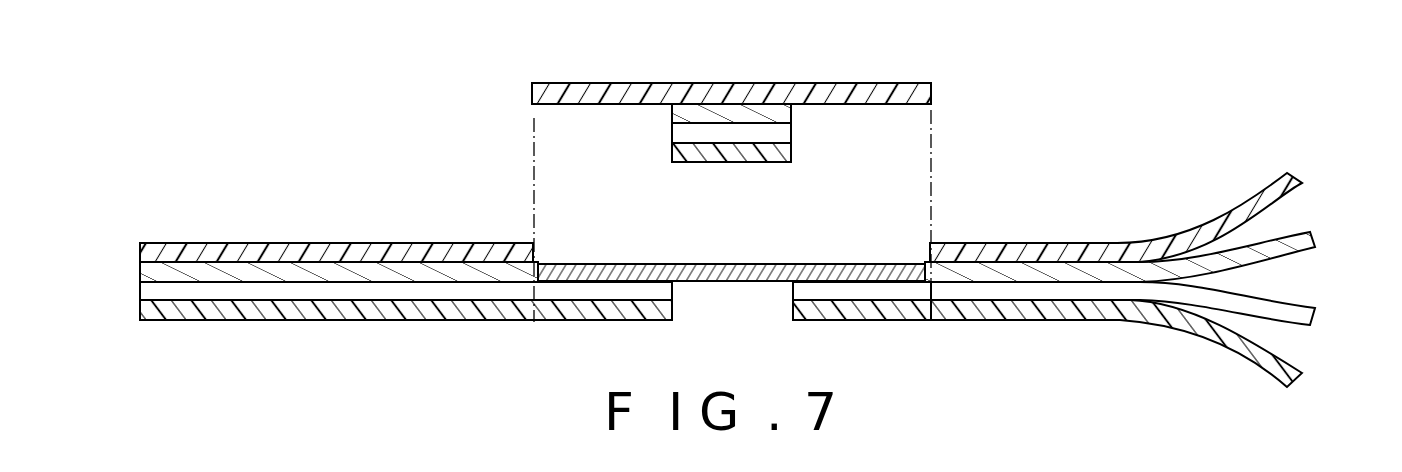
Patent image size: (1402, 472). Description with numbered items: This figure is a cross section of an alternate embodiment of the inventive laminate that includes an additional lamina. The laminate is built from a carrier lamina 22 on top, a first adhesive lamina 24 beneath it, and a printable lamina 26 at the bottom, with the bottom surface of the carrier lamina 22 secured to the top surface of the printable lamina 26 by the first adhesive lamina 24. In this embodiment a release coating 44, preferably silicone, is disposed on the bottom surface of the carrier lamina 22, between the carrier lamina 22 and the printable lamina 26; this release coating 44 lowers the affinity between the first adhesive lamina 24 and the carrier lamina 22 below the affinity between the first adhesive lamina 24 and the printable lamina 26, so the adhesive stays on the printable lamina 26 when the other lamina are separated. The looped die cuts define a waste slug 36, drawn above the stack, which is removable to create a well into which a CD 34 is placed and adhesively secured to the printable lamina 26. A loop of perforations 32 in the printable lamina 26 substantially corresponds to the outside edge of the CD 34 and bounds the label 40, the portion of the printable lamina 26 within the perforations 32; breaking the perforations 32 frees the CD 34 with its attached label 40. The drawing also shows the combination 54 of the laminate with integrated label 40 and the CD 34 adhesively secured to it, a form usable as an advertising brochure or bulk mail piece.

The carrier lamina 22 is at (1297, 182).
The first adhesive lamina 24 is at (1302, 312).
The printable lamina 26 is at (1290, 380).
The perforations 32 is at (534, 330).
The CD 34 is at (660, 264).
The waste slug 36 is at (627, 55).
The label 40 is at (592, 307).
The release coating 44 is at (1303, 245).
The combination 54 is at (122, 237).